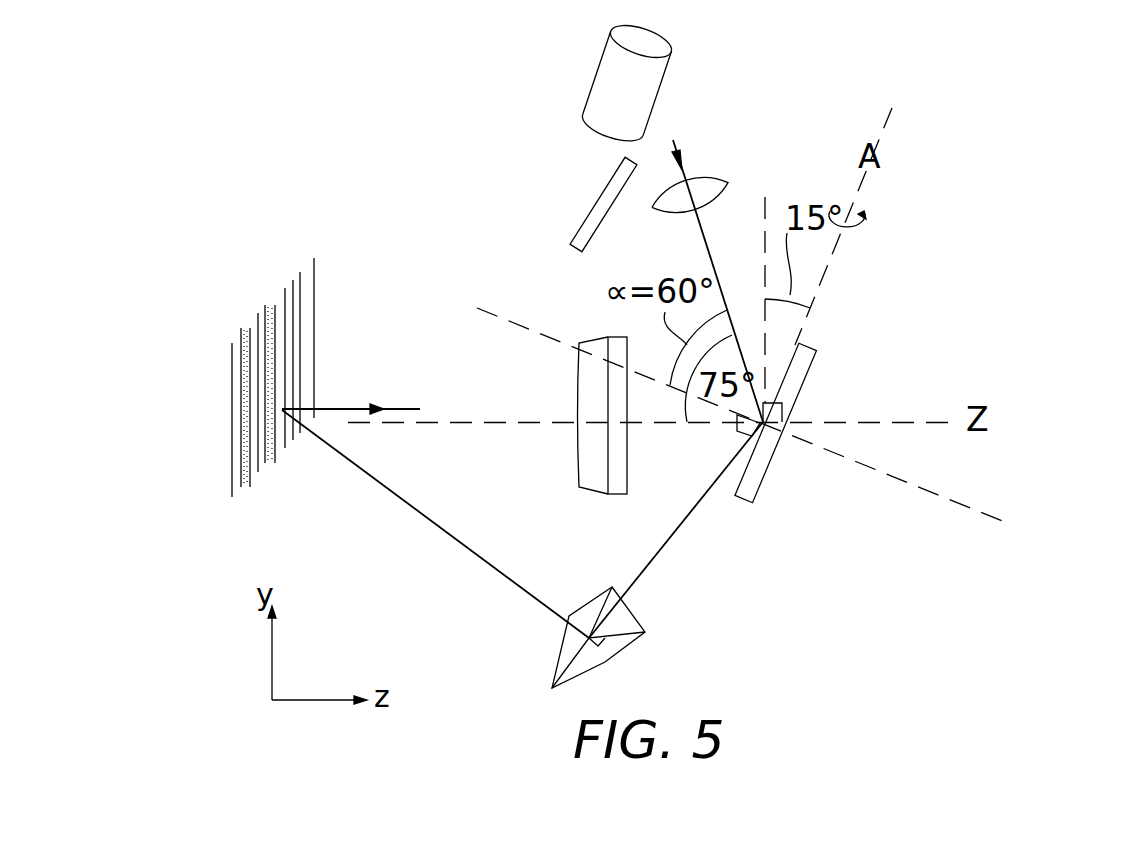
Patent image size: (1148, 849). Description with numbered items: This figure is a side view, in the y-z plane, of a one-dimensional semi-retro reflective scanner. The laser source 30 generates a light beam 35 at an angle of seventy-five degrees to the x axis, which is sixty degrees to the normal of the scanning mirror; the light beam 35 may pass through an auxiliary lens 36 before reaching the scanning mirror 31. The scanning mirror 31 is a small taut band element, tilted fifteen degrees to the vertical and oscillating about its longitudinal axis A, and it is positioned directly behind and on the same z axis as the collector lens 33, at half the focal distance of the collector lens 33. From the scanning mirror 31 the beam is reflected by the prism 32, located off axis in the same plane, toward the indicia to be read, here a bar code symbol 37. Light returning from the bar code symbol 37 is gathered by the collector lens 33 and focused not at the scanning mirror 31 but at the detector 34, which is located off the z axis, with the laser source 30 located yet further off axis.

The laser source 30 is at (675, 67).
The scanning mirror 31 is at (810, 373).
The prism 32 is at (617, 645).
The collector lens 33 is at (578, 378).
The detector 34 is at (603, 190).
The light beam 35 is at (678, 148).
The auxiliary lens 36 is at (712, 185).
The bar code symbol 37 is at (306, 311).